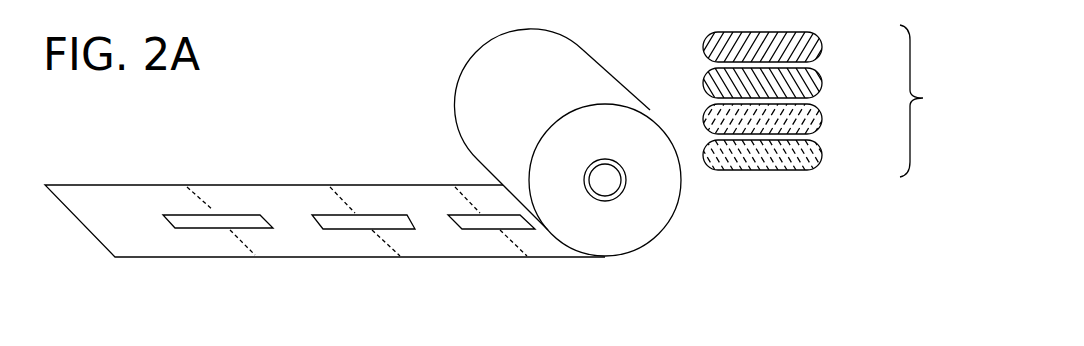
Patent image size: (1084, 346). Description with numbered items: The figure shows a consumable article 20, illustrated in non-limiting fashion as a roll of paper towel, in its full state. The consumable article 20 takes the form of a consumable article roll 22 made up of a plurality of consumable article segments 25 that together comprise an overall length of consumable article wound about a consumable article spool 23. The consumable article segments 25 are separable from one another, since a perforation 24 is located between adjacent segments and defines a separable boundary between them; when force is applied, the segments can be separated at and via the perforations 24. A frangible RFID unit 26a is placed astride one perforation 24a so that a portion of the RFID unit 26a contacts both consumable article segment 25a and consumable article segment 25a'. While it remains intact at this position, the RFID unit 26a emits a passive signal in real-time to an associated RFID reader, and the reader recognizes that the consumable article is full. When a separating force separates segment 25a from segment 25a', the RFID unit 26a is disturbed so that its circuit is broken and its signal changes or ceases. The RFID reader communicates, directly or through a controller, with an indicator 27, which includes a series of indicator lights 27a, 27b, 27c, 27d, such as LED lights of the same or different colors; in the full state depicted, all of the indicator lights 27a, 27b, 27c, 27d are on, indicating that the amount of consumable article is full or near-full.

The consumable article 20 is at (676, 233).
The consumable article roll 22 is at (598, 227).
The consumable article spool 23 is at (620, 162).
The perforation 24 is at (243, 243).
The perforation 24a is at (465, 192).
The consumable article segments 25 is at (240, 193).
The consumable article segment 25a is at (289, 168).
The consumable article segment 25a' is at (442, 123).
The RFID unit 26a is at (483, 227).
The indicator 27 is at (931, 101).
The indicator light 27a is at (820, 46).
The indicator light 27b is at (820, 83).
The indicator light 27c is at (820, 119).
The indicator light 27d is at (820, 155).